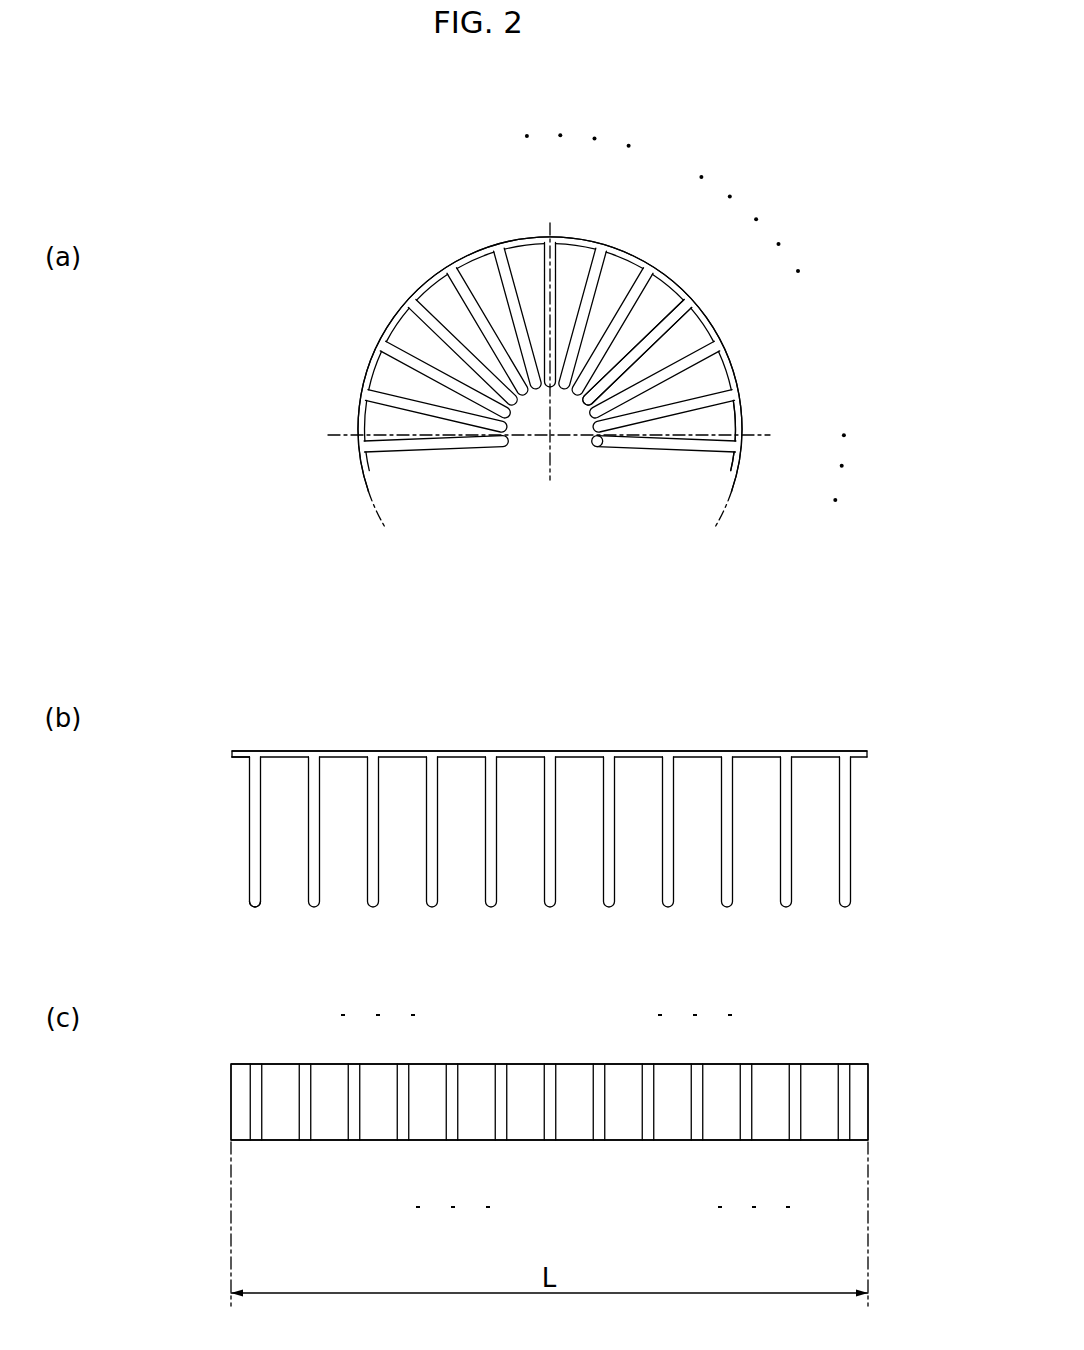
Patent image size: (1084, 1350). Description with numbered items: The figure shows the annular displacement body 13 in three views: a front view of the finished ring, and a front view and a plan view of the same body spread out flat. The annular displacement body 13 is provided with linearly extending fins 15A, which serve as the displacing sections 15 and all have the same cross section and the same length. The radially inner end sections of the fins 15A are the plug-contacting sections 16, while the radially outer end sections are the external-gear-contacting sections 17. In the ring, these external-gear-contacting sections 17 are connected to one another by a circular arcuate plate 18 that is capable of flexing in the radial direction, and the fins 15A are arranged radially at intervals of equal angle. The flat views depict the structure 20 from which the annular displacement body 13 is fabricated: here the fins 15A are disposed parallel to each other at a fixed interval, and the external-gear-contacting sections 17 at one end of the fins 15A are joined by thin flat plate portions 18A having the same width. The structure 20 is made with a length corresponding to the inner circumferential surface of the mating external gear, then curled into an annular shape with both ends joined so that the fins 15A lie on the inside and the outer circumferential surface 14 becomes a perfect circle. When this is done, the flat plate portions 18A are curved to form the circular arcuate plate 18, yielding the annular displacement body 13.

The annular displacement body 13 is at (386, 234).
The outer circumferential surface 14 is at (398, 314).
The displacing section 15 is at (665, 337).
The fin 15A is at (598, 283).
The plug-contacting section 16 is at (598, 449).
The external-gear-contacting section 17 is at (738, 399).
The circular arcuate plate 18 is at (742, 426).
The flat plate portion 18A is at (280, 755).
The structure 20 is at (890, 782).